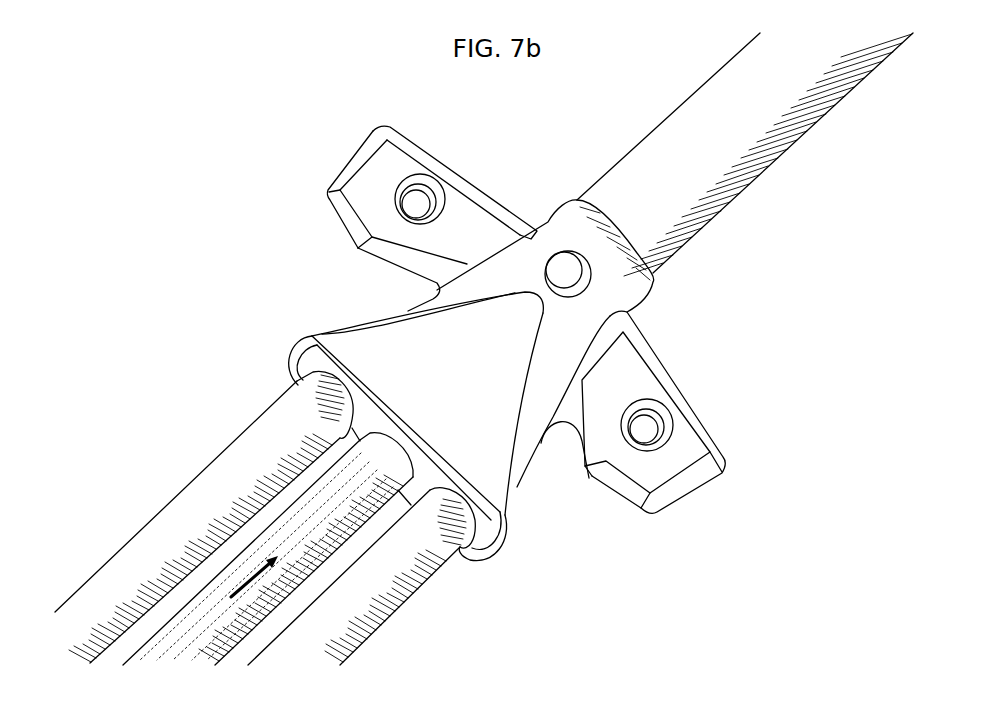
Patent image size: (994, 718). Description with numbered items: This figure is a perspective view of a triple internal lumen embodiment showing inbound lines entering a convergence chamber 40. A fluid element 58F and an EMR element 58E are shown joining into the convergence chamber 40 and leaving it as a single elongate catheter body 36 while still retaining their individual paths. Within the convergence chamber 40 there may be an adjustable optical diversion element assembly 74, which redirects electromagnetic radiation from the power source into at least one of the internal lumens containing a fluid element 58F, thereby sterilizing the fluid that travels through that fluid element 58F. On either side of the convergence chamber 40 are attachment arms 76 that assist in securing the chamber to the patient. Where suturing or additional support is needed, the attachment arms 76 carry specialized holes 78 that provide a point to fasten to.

The single elongate catheter body 36 is at (628, 156).
The convergence chamber 40 is at (408, 371).
The adjustable optical diversion element assembly 74 is at (574, 273).
The attachment arms 76 is at (478, 218).
The specialized holes 78 is at (436, 184).
The EMR element 58E is at (338, 496).
The fluid element 58F is at (222, 466).